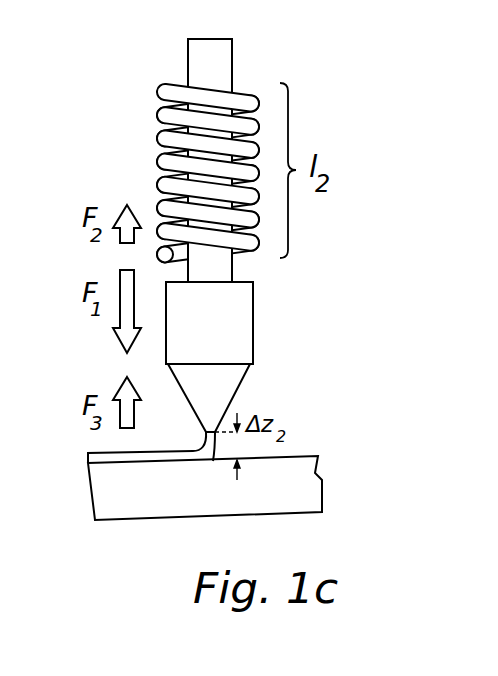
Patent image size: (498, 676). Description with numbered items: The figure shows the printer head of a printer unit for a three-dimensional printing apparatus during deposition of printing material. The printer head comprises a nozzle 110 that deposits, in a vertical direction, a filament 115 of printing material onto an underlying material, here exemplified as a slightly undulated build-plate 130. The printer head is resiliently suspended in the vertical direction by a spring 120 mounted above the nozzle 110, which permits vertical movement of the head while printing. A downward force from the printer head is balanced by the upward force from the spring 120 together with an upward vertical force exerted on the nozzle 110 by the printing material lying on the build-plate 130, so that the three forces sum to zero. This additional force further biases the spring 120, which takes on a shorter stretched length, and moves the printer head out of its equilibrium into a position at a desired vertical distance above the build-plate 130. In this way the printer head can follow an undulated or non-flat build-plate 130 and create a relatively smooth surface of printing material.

The nozzle 110 is at (243, 393).
The filament 115 is at (120, 463).
The spring 120 is at (157, 95).
The build-plate 130 is at (313, 486).